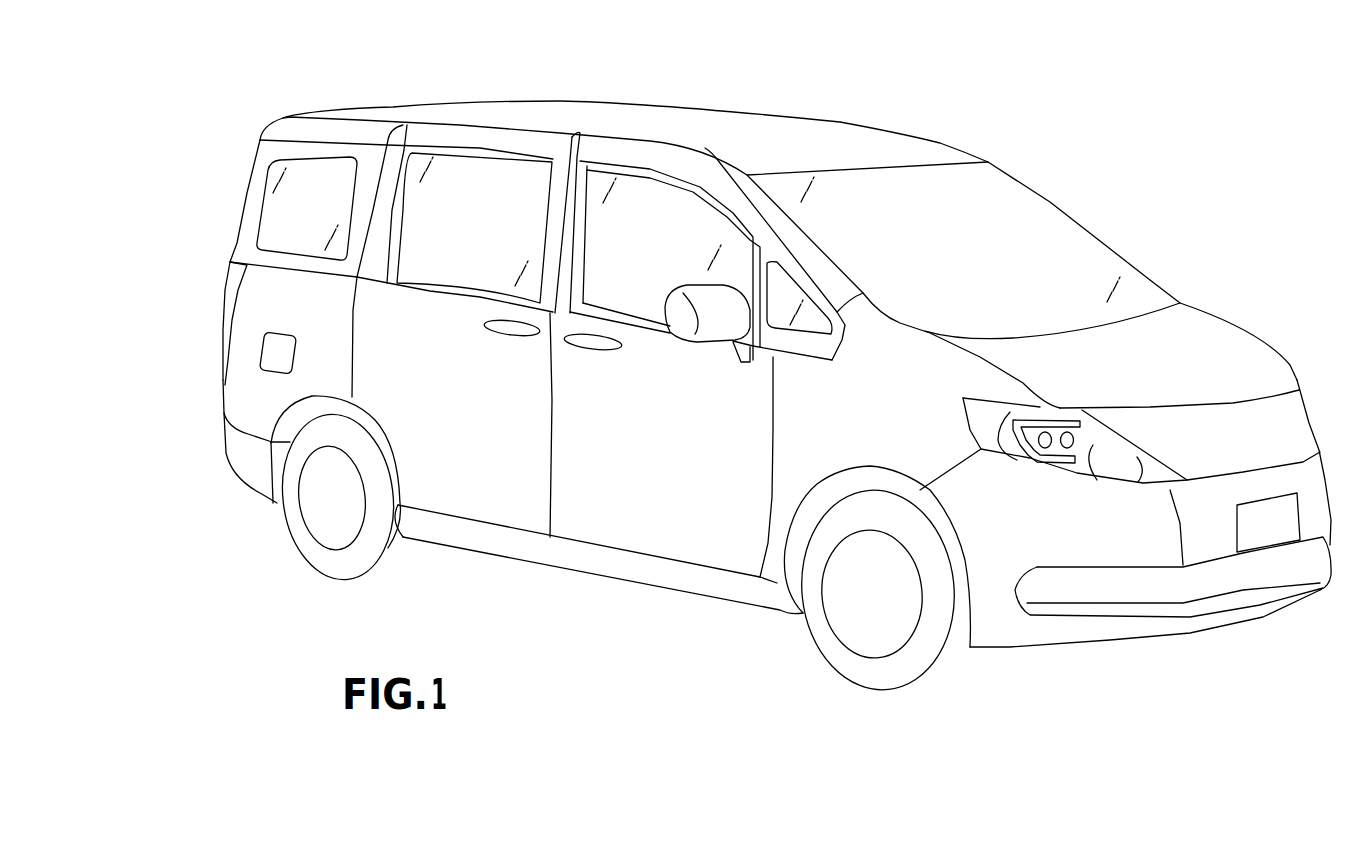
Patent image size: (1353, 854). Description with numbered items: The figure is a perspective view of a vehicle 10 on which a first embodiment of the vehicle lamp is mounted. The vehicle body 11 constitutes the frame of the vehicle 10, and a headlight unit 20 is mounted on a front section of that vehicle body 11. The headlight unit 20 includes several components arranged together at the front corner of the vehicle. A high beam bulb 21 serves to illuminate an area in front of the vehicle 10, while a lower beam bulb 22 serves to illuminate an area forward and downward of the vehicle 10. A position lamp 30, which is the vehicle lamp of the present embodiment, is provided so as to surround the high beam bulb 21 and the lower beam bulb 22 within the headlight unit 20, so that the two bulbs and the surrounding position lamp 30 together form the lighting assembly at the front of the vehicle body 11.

The vehicle 10 is at (777, 416).
The vehicle body 11 is at (800, 441).
The headlight unit 20 is at (1048, 597).
The high beam bulb 21 is at (1065, 450).
The lower beam bulb 22 is at (1038, 454).
The position lamp 30 is at (1019, 438).